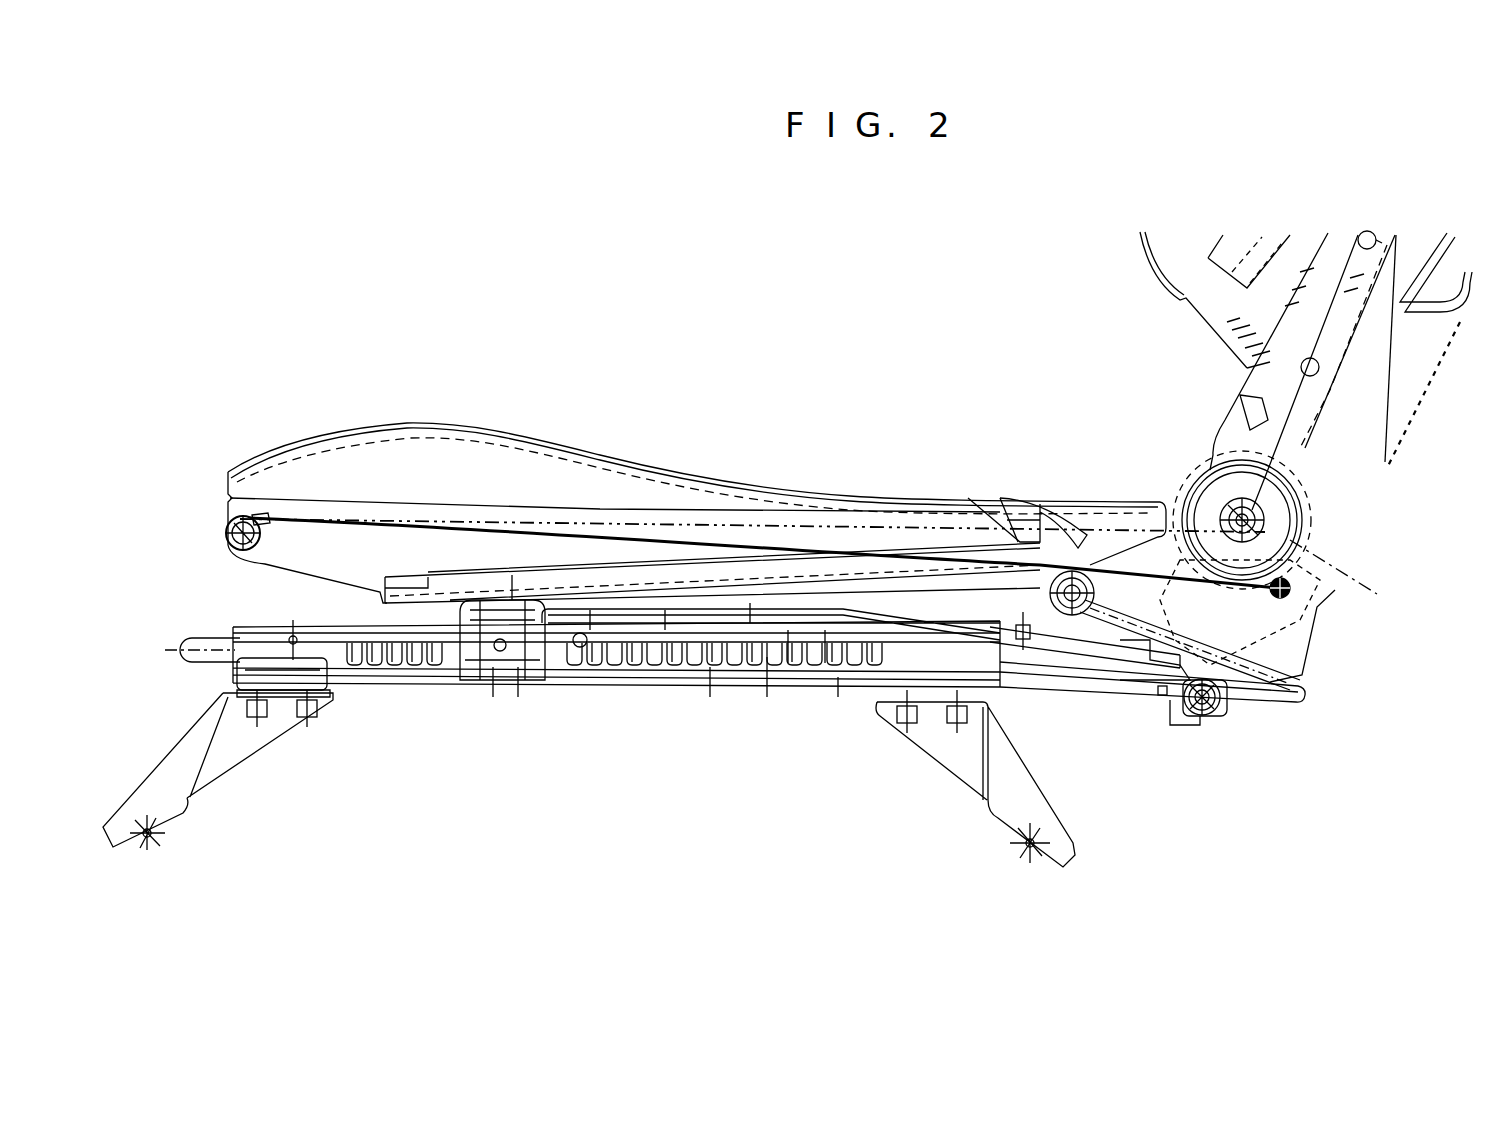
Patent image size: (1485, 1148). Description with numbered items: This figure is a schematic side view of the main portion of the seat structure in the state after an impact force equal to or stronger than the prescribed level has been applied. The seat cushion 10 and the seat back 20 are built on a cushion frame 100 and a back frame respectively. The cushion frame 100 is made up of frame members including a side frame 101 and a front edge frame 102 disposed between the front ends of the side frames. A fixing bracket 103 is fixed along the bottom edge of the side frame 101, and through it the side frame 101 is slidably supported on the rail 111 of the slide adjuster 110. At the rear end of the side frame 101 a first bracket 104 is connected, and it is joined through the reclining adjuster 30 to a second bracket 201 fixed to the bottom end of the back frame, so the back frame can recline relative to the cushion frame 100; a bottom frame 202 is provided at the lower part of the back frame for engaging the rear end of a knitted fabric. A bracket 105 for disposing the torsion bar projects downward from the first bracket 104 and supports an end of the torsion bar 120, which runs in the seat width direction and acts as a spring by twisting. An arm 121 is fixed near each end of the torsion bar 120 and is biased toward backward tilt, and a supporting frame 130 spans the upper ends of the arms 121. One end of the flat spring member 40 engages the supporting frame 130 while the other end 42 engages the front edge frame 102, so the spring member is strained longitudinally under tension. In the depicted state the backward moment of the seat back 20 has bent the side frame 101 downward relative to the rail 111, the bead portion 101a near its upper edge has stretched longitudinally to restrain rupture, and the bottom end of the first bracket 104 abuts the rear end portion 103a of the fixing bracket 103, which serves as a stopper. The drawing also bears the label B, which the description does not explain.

The seat cushion 10 is at (502, 418).
The seat back 20 is at (1148, 292).
The reclining adjuster 30 is at (1282, 523).
The flat spring member 40 is at (843, 553).
The other end of flat spring member 42 is at (262, 520).
The cushion frame 100 is at (352, 428).
The side frame 101 is at (431, 452).
The bead portion 101a is at (1040, 504).
The front edge frame 102 is at (230, 530).
The fixing bracket 103 is at (1047, 662).
The rear end portion of fixing bracket 103a is at (1292, 697).
The first bracket 104 is at (1310, 655).
The bracket for disposing the torsion bar 105 is at (1180, 722).
The slide adjuster 110 is at (396, 690).
The rail 111 is at (530, 680).
The torsion bar 120 is at (1205, 712).
The arm 121 is at (1222, 655).
The supporting frame 130 is at (1290, 595).
The second bracket 201 is at (1248, 372).
The bottom frame 202 is at (1242, 520).
The viewing direction B is at (1017, 482).